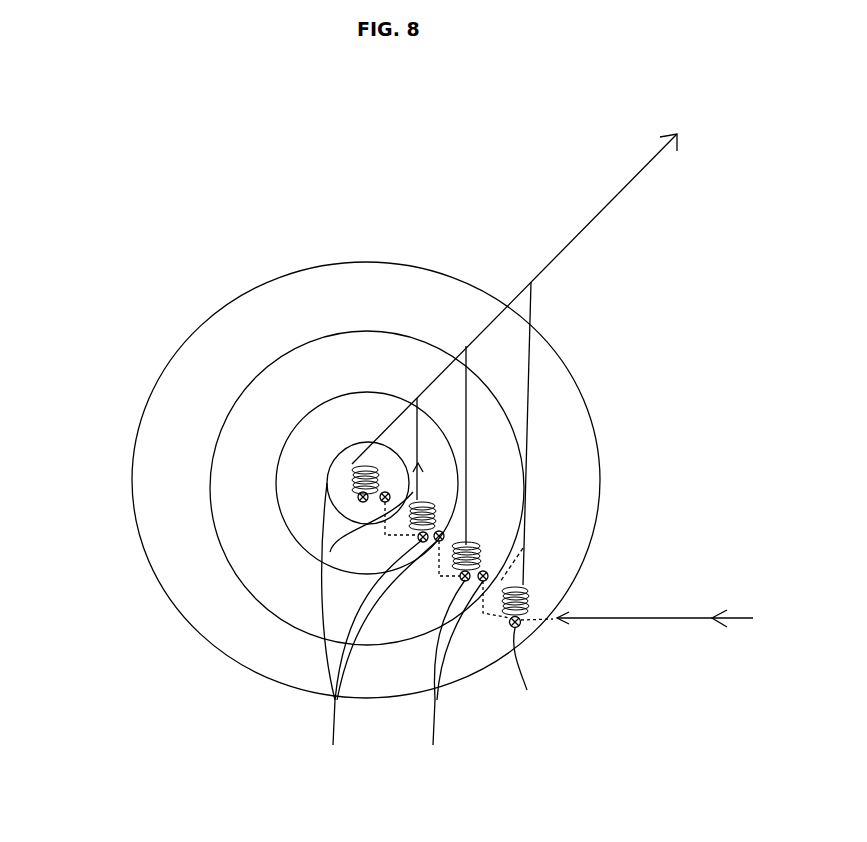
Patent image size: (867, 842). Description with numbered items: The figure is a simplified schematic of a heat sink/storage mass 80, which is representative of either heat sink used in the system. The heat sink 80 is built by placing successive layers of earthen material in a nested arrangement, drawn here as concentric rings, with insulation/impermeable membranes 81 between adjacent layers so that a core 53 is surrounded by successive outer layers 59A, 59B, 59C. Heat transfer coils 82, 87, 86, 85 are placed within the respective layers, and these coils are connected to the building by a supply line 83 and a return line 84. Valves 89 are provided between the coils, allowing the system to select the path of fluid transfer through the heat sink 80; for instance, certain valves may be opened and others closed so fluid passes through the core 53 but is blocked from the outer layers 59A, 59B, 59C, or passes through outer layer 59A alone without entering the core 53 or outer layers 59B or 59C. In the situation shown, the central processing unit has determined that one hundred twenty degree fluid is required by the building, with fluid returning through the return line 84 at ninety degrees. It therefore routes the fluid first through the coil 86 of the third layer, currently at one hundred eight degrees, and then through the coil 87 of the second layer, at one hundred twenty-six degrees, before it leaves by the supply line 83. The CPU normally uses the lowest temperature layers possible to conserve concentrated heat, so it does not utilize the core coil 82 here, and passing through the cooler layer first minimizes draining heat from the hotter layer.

The heat sink/storage mass 80 is at (312, 218).
The insulation/impermeable membranes 81 is at (330, 500).
The core 53 is at (342, 461).
The heat transfer coil (core) 82 is at (358, 466).
The supply line 83 is at (640, 174).
The return line 84 is at (678, 618).
The heat transfer coil (outer layer) 85 is at (530, 598).
The heat transfer coil (third layer) 86 is at (490, 552).
The heat transfer coil (second layer) 87 is at (447, 514).
The valves 89 is at (430, 638).
The first outer layer 59A is at (295, 493).
The second outer layer 59B is at (288, 583).
The third outer layer 59C is at (303, 670).